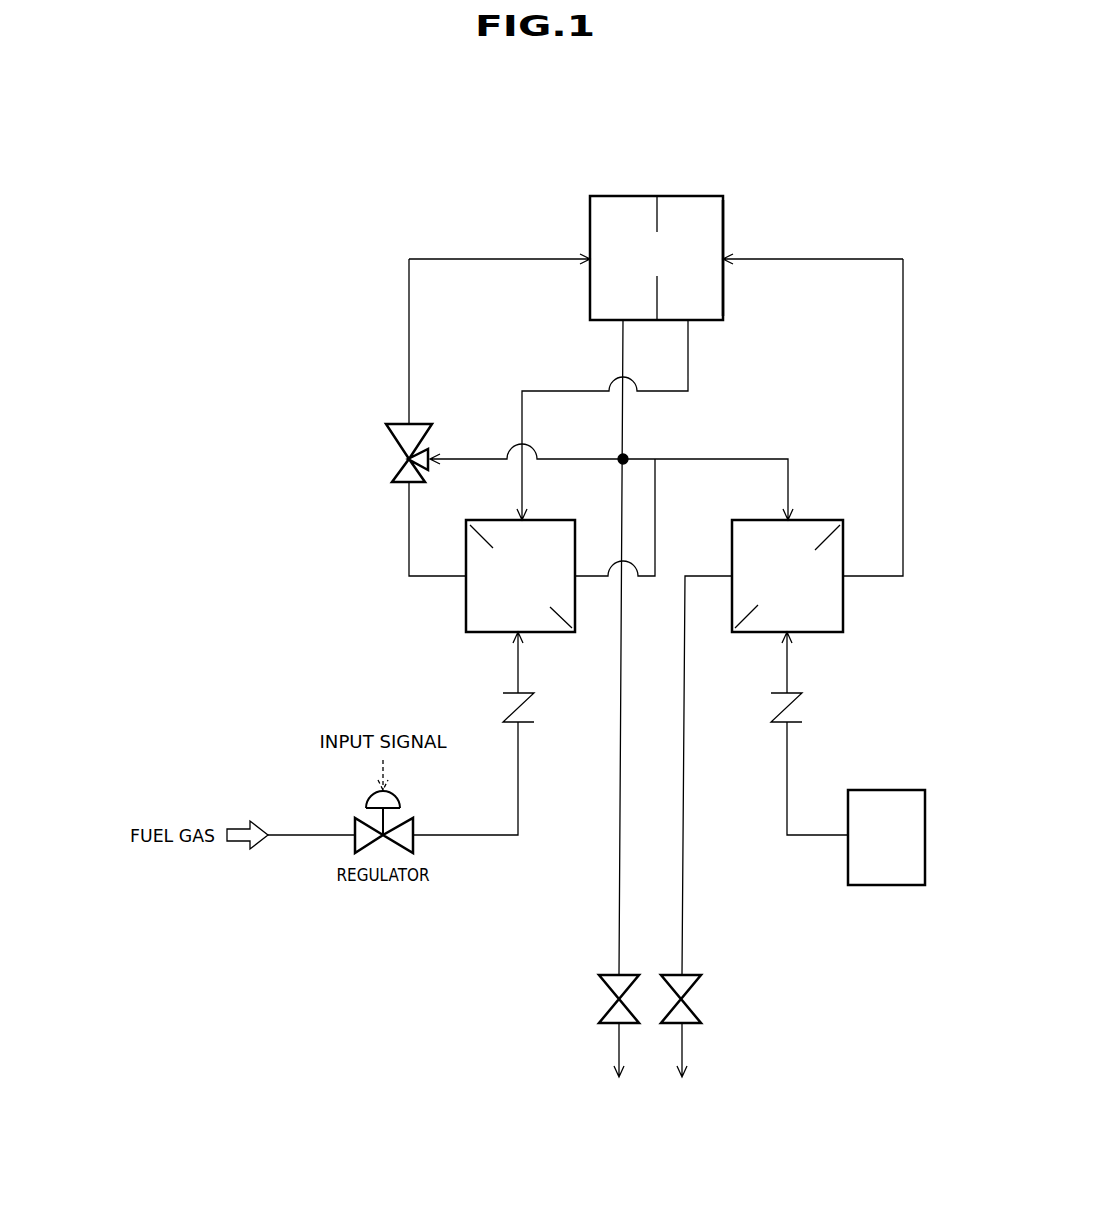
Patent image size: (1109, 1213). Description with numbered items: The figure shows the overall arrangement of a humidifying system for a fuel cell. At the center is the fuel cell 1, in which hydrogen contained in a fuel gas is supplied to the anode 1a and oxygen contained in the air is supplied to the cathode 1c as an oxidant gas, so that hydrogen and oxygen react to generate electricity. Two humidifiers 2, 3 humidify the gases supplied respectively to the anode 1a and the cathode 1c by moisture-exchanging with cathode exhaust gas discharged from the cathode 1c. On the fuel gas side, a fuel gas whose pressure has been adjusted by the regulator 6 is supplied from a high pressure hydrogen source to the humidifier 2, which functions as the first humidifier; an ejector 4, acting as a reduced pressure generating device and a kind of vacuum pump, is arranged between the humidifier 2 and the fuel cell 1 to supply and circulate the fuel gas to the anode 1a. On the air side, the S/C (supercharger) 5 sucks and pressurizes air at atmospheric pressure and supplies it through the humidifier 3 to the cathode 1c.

The fuel cell 1 is at (699, 183).
The anode 1a is at (602, 220).
The cathode 1c is at (710, 220).
The humidifier 2 is at (466, 600).
The humidifier 3 is at (843, 603).
The ejector 4 is at (400, 445).
The S/C (supercharger) 5 is at (893, 790).
The regulator 6 is at (366, 797).